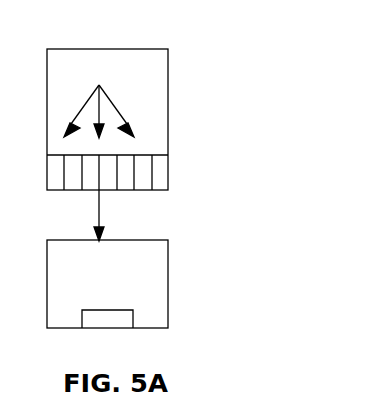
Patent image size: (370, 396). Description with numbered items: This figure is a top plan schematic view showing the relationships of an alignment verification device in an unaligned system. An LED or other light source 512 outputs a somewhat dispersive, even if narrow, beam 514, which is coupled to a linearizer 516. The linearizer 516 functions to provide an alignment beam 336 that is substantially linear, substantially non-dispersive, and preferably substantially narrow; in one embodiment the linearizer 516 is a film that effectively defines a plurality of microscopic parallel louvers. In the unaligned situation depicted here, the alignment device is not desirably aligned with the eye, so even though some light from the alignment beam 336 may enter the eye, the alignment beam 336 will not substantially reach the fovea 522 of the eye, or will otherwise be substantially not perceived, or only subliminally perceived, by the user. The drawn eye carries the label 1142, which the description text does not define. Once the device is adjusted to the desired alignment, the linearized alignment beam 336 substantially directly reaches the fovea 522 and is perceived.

The light source 512 is at (128, 73).
The beam 514 is at (122, 112).
The linearizer 516 is at (168, 174).
The alignment beam 336 is at (107, 222).
The eye 1142 is at (168, 285).
The fovea 522 is at (100, 322).